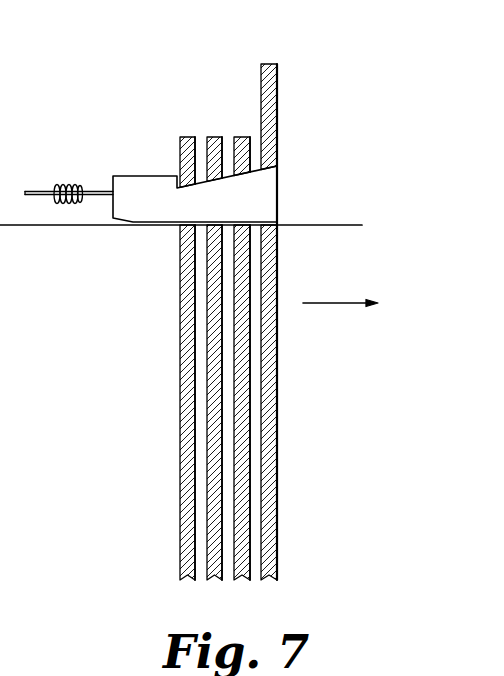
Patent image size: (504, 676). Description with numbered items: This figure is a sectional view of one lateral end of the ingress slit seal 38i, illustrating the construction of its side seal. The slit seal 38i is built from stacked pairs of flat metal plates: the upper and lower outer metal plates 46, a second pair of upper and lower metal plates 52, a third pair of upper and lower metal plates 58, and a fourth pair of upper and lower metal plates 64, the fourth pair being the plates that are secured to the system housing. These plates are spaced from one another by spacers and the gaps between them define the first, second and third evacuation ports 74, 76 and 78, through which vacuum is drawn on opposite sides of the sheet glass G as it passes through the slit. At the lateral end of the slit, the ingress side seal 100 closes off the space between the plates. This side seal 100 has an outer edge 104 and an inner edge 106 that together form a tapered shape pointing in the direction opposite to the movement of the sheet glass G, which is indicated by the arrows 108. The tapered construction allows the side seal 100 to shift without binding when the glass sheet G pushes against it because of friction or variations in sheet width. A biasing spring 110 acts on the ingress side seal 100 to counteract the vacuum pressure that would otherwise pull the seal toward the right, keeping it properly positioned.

The sheet glass G is at (20, 224).
The ingress slit seal 38i is at (128, 83).
The upper and lower outer metal plates 46 is at (181, 355).
The second pair of upper and lower metal plates 52 is at (207, 418).
The third pair of upper and lower metal plates 58 is at (250, 401).
The fourth pair of upper and lower metal plates 64 is at (278, 457).
The first evacuation port 74 is at (200, 465).
The second evacuation port 76 is at (228, 498).
The third evacuation port 78 is at (257, 532).
The ingress side seal 100 is at (304, 184).
The outer edge 104 is at (228, 173).
The inner edge 106 is at (228, 225).
The arrows 108 is at (325, 303).
The biasing spring 110 is at (80, 183).